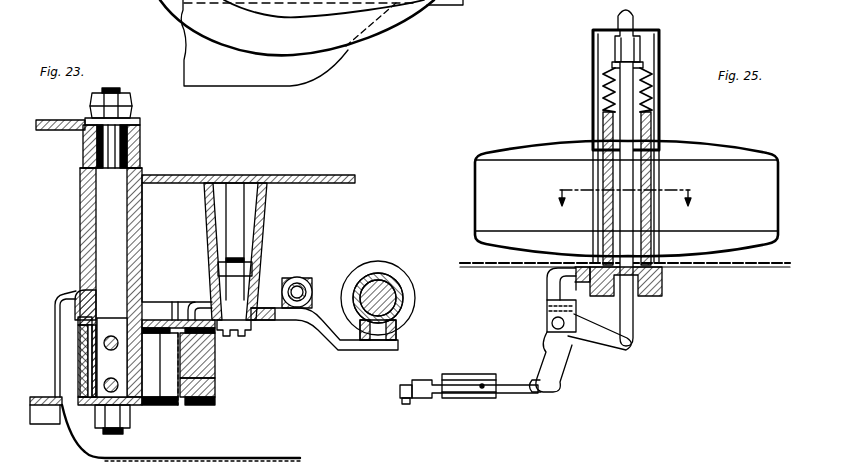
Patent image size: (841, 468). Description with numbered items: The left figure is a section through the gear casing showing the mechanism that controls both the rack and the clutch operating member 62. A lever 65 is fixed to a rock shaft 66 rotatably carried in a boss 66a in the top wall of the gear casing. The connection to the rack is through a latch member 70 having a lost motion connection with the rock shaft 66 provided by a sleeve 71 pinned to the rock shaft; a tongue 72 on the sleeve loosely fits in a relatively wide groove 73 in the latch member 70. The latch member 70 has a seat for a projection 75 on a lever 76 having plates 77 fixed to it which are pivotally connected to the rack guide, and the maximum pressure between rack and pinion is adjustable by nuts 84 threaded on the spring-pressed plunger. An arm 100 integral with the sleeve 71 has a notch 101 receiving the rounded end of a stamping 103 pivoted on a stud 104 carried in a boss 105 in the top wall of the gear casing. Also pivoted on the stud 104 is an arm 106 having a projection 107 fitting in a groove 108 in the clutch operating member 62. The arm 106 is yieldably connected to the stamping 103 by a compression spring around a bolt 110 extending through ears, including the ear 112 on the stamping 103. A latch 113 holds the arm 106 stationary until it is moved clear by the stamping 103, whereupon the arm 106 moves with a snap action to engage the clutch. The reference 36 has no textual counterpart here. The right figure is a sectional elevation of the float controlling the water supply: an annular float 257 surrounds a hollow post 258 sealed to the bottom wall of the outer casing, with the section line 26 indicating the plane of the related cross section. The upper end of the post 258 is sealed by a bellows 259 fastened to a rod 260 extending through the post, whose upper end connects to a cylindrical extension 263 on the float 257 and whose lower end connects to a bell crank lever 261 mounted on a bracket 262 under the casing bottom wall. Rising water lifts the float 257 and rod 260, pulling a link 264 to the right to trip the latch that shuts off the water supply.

In FIG. 23, the lever 65 is at (55, 131).
In FIG. 23, the rock shaft 66 is at (100, 253).
In FIG. 23, the boss 66a is at (142, 268).
In FIG. 23, the boss 105 is at (258, 244).
In FIG. 23, the housing 36 is at (55, 327).
In FIG. 23, the tongue 72 is at (78, 358).
In FIG. 23, the groove 73 is at (84, 372).
In FIG. 23, the sleeve 71 is at (94, 386).
In FIG. 23, the latch member 70 is at (165, 390).
In FIG. 23, the plates 77 is at (171, 342).
In FIG. 23, the projection 75 is at (216, 378).
In FIG. 23, the lever 76 is at (216, 397).
In FIG. 23, the arm 100 is at (153, 318).
In FIG. 23, the notch 101 is at (173, 304).
In FIG. 23, the stamping 103 is at (203, 312).
In FIG. 23, the stud 104 is at (247, 337).
In FIG. 23, the arm 106 is at (330, 342).
In FIG. 23, the ear 112 is at (286, 280).
In FIG. 23, the bolt 110 is at (299, 278).
In FIG. 23, the latch 113 is at (306, 286).
In FIG. 23, the groove 108 is at (405, 299).
In FIG. 23, the nuts 84 is at (369, 274).
In FIG. 23, the clutch operating member 62 is at (381, 274).
In FIG. 23, the projection 107 is at (393, 328).
In FIG. 25, the cylindrical extension 263 is at (660, 62).
In FIG. 25, the bellows 259 is at (654, 94).
In FIG. 25, the rod 260 is at (634, 315).
In FIG. 25, the annular float 257 is at (760, 154).
In FIG. 25, the hollow post 258 is at (652, 173).
In FIG. 25, the section line 26— 26 is at (621, 195).
In FIG. 25, the bracket 262 is at (547, 286).
In FIG. 25, the bell crank lever 261 is at (608, 350).
In FIG. 25, the link 264 is at (518, 400).